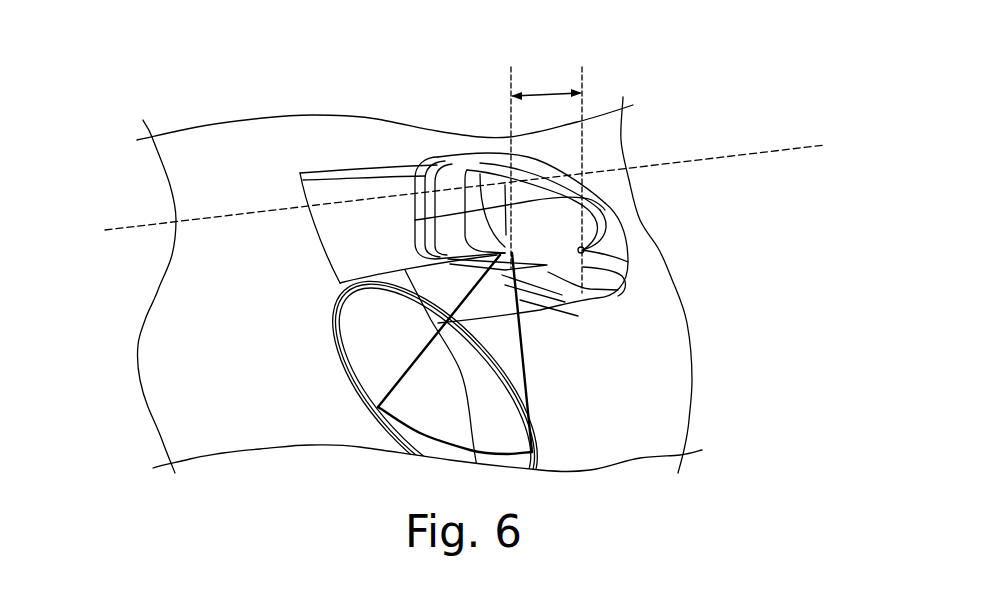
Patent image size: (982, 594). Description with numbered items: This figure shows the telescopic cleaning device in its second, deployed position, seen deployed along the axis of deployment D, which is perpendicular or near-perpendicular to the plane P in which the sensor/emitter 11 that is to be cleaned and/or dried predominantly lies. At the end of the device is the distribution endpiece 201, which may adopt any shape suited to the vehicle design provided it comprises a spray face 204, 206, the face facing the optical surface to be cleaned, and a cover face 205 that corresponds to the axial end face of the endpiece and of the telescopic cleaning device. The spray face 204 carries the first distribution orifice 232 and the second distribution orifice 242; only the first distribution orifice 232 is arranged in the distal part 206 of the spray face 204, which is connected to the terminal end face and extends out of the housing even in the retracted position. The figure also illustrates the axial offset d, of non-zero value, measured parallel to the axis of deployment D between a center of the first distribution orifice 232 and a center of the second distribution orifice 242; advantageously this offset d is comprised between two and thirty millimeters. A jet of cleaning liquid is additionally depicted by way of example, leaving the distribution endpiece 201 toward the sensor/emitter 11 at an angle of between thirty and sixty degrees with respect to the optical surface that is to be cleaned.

The plane P is at (173, 413).
The axis of deployment D is at (810, 145).
The axial offset d is at (548, 88).
The sensor/emitter 11 is at (383, 380).
The distribution endpiece 201 is at (608, 205).
The cover face 205 is at (503, 170).
The first distribution orifice 232 is at (586, 267).
The spray face 204 is at (689, 277).
The distal part 206 is at (600, 280).
The second distribution orifice 242 is at (540, 280).